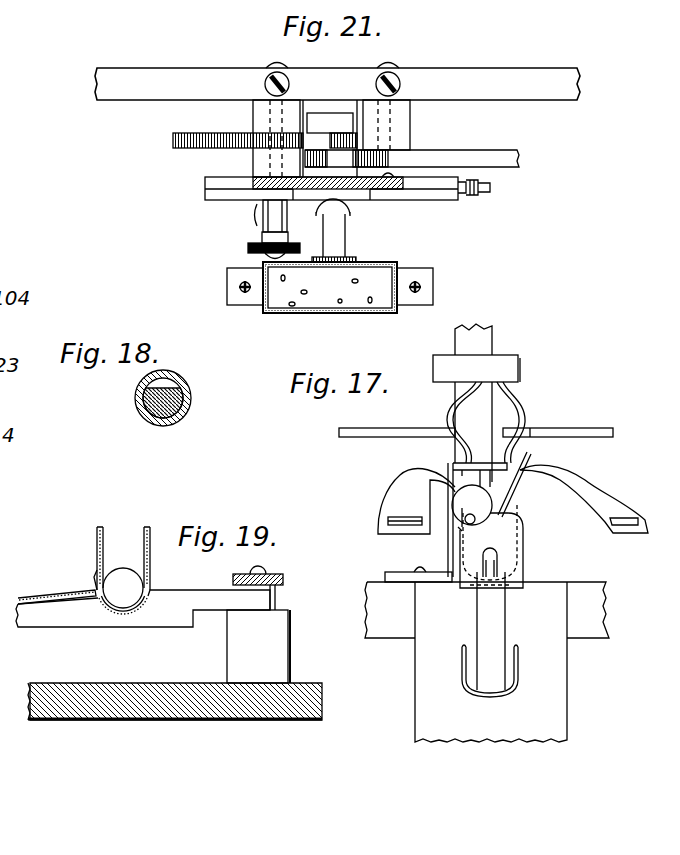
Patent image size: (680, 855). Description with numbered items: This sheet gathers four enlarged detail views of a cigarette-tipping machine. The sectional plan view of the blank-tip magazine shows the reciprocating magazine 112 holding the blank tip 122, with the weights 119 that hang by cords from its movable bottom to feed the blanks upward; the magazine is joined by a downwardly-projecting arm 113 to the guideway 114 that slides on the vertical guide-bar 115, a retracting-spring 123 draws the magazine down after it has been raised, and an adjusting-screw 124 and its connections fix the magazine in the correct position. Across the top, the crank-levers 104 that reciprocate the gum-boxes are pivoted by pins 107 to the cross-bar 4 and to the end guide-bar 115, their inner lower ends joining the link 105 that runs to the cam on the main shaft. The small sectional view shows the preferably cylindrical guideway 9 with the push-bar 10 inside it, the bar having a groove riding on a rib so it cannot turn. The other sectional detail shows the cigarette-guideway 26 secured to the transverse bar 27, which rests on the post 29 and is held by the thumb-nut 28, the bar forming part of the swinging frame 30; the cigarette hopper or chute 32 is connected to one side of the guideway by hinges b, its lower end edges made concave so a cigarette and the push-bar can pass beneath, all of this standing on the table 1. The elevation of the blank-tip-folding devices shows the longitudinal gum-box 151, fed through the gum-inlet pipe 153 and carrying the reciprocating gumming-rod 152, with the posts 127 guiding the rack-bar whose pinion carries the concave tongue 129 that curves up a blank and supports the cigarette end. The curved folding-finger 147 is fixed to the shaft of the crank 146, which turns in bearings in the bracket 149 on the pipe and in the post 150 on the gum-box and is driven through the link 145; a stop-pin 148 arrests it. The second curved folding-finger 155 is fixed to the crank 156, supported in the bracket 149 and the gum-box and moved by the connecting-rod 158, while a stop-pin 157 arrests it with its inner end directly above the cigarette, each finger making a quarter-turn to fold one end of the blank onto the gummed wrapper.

In FIG. 17, the table 1 is at (600, 617).
In FIG. 19, the table 1 is at (321, 703).
In FIG. 21, the cross-bar 4 is at (337, 70).
In FIG. 18, the guideway 9 is at (135, 398).
In FIG. 18, the push-bar 10 is at (191, 398).
In FIG. 19, the hinges b is at (100, 592).
In FIG. 19, the cigarette-guideway 26 is at (108, 607).
In FIG. 19, the transverse bar 27 is at (143, 597).
In FIG. 19, the thumb-nut 28 is at (267, 579).
In FIG. 19, the post 29 is at (258, 646).
In FIG. 19, the swinging frame 30 is at (55, 585).
In FIG. 19, the cigarette hopper or chute 32 is at (105, 558).
In FIG. 21, the crank-levers 104 is at (220, 135).
In FIG. 21, the link 105 is at (320, 120).
In FIG. 21, the pins 107 is at (275, 63).
In FIG. 21, the reciprocating magazine 112 is at (330, 301).
In FIG. 21, the downwardly-projecting arm 113 is at (347, 238).
In FIG. 21, the guideway 114 is at (320, 202).
In FIG. 21, the vertical guide-bar 115 is at (278, 177).
In FIG. 17, the vertical guide-bar 115 is at (491, 662).
In FIG. 21, the weights 119 is at (228, 283).
In FIG. 21, the blank tip 122 is at (326, 290).
In FIG. 21, the retracting-spring 123 is at (492, 186).
In FIG. 21, the adjusting-screw 124 is at (250, 247).
In FIG. 17, the posts 127 is at (523, 552).
In FIG. 17, the concave tongue 129 is at (518, 657).
In FIG. 17, the link 145 is at (562, 419).
In FIG. 17, the crank 146 is at (523, 420).
In FIG. 17, the curved folding-finger 147 is at (582, 486).
In FIG. 17, the stop-pin 148 is at (536, 447).
In FIG. 17, the bracket 149 is at (521, 366).
In FIG. 17, the post 150 is at (503, 495).
In FIG. 17, the gum-box 151 is at (482, 509).
In FIG. 17, the gumming-rod 152 is at (460, 527).
In FIG. 17, the gum-inlet pipe 153 is at (484, 345).
In FIG. 17, the second curved folding-finger 155 is at (386, 503).
In FIG. 17, the crank 156 is at (448, 410).
In FIG. 17, the stop-pin 157 is at (446, 466).
In FIG. 17, the connecting-rod 158 is at (377, 421).